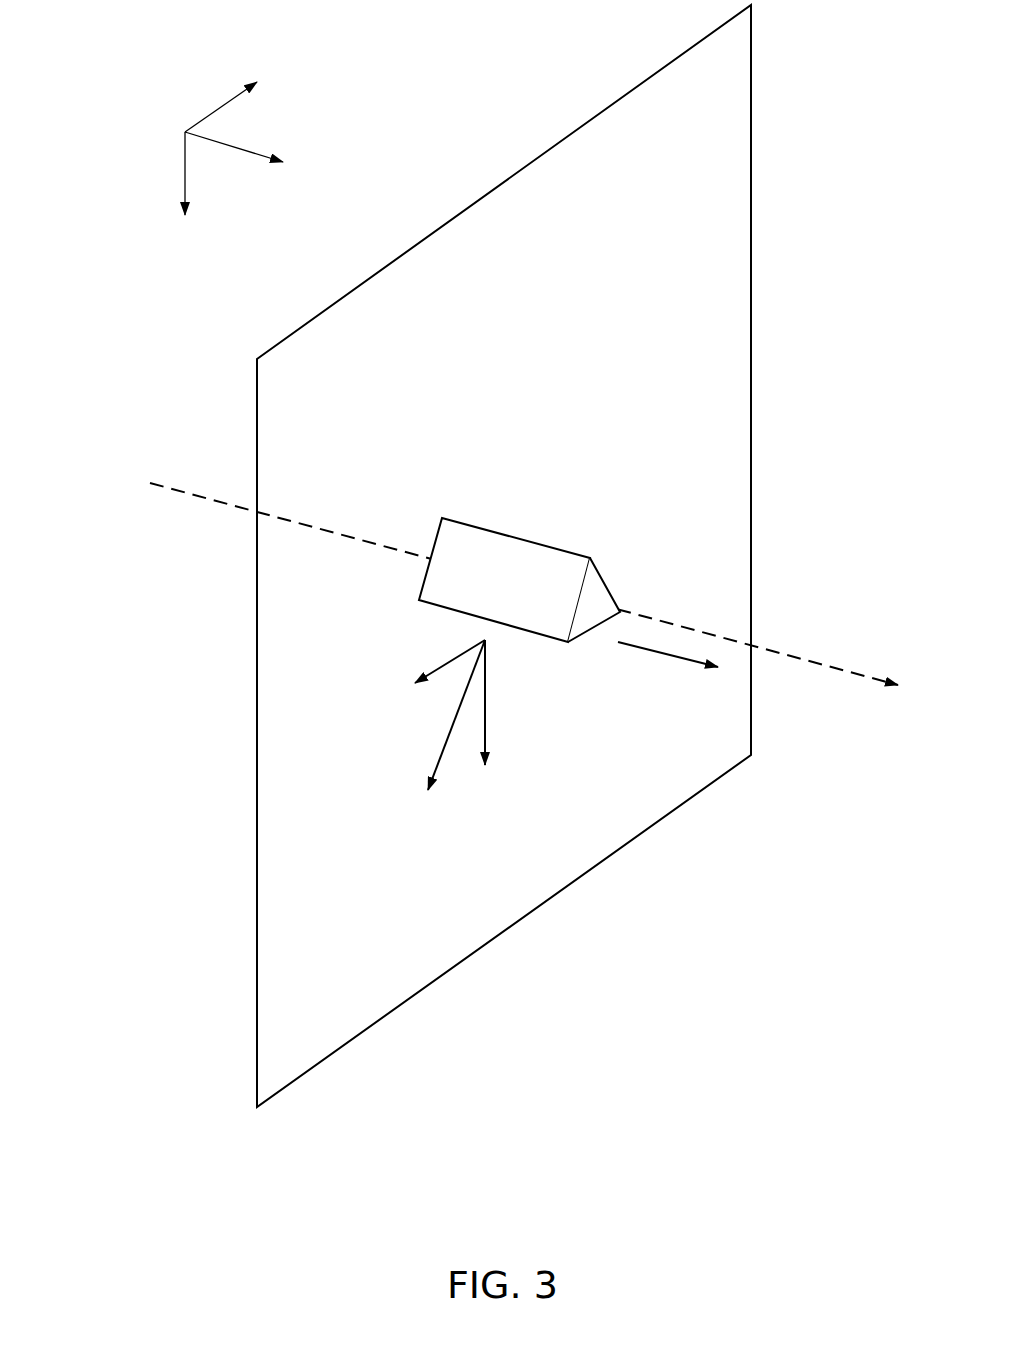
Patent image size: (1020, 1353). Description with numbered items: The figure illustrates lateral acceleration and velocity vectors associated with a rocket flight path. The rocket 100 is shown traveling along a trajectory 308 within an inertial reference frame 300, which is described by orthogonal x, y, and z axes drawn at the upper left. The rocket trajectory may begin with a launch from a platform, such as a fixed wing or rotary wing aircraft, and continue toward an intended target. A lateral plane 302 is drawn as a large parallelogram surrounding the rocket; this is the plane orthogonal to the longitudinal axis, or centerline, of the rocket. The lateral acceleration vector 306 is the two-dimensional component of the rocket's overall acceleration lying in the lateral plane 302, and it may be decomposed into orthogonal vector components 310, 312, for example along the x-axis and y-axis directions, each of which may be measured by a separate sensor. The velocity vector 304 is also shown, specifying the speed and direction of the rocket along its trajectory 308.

The inertial reference frame 300 is at (235, 141).
The lateral plane 302 is at (770, 102).
The trajectory 308 is at (233, 532).
The rocket 100 is at (541, 518).
The velocity vector 304 is at (668, 683).
The orthogonal vector component 310 is at (392, 693).
The orthogonal vector component 312 is at (550, 708).
The lateral acceleration vector 306 is at (431, 770).